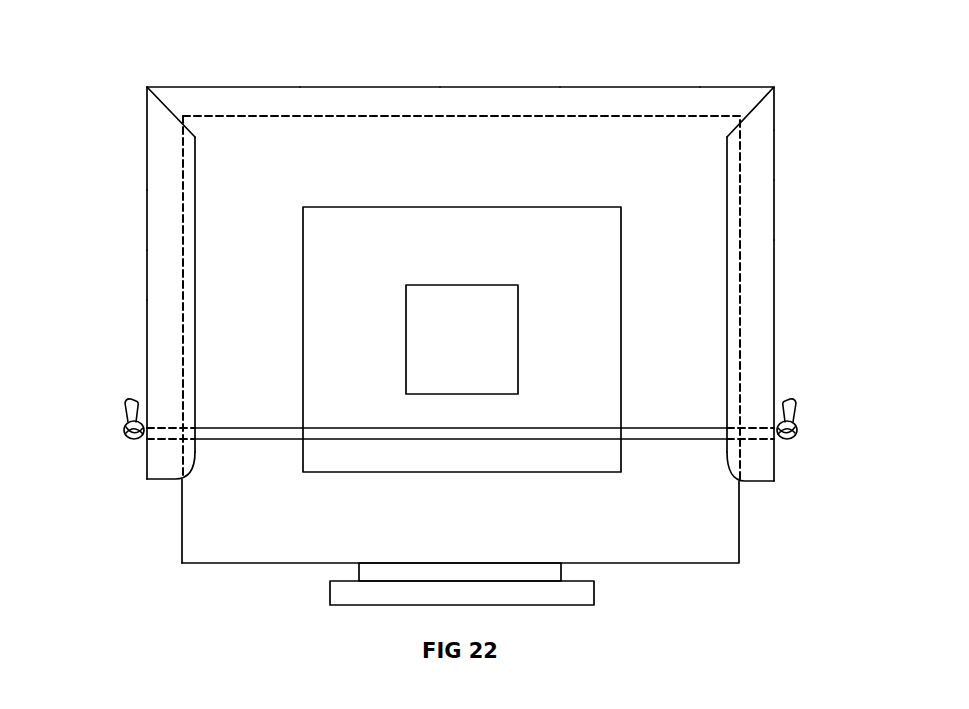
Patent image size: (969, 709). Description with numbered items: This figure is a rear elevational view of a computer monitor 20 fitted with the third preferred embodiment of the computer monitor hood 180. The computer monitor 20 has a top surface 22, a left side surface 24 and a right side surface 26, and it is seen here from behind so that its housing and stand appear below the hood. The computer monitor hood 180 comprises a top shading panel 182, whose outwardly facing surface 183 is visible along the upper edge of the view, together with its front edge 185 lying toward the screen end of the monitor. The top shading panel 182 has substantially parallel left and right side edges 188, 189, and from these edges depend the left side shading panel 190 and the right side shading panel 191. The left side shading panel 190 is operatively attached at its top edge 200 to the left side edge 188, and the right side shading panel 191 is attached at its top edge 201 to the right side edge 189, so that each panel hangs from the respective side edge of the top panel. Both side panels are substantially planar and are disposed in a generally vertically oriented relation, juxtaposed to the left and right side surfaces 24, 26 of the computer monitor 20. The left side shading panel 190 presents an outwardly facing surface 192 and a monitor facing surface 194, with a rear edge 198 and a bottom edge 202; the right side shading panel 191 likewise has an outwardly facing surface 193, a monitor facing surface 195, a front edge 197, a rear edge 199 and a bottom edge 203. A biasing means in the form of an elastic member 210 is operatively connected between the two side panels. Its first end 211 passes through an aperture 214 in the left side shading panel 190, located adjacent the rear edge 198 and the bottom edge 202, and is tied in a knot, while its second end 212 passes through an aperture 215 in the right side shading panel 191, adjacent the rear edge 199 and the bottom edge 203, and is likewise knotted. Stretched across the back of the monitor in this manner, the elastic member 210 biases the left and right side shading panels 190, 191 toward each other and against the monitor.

The computer monitor 20 is at (224, 592).
The top surface 22 is at (455, 116).
The left side surface 24 is at (740, 556).
The right side surface 26 is at (182, 556).
The computer monitor hood 180 is at (600, 100).
The top shading panel 182 is at (520, 100).
The outwardly facing surface 183 is at (365, 87).
The front edge 185 is at (288, 112).
The left side edge 188 is at (774, 87).
The right side edge 189 is at (147, 87).
The left side shading panel 190 is at (764, 165).
The right side shading panel 191 is at (160, 148).
The outwardly facing surface 192 is at (775, 220).
The outwardly facing surface 193 is at (147, 219).
The monitor facing surface 194 is at (727, 283).
The monitor facing surface 195 is at (197, 277).
The front edge 197 is at (163, 265).
The rear edge 198 is at (758, 253).
The rear edge 199 is at (163, 339).
The top edge 200 is at (774, 87).
The top edge 201 is at (147, 87).
The bottom edge 202 is at (757, 482).
The bottom edge 203 is at (160, 480).
The elastic member 210 is at (558, 432).
The first end 211 is at (797, 436).
The second end 212 is at (125, 436).
The aperture 214 is at (750, 423).
The aperture 215 is at (172, 422).